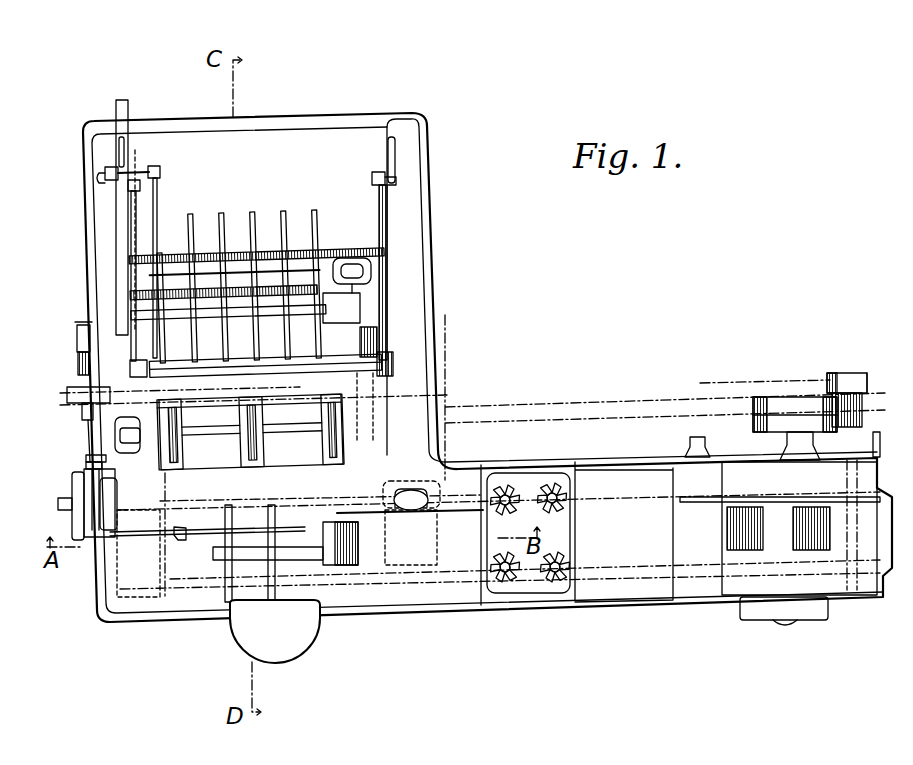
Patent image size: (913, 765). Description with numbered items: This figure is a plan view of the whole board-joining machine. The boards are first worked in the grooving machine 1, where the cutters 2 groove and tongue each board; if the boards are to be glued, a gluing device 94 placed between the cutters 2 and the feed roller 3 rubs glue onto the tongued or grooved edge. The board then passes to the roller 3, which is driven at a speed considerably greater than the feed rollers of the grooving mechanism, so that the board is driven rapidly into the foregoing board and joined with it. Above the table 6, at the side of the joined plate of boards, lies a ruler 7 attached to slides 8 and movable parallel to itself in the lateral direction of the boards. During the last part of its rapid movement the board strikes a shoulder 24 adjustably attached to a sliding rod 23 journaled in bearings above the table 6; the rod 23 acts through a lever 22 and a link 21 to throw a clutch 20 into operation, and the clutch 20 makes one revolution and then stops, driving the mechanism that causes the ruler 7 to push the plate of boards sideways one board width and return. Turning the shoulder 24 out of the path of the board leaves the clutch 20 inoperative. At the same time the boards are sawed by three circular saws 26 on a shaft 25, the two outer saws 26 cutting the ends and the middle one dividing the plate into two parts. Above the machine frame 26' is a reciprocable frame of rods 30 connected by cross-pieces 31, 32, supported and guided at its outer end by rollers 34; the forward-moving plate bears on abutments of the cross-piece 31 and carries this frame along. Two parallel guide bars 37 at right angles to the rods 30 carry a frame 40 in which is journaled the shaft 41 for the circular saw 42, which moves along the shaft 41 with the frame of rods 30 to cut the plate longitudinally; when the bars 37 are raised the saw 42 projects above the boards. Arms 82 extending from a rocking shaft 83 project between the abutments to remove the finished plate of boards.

The grooving machine 1 is at (637, 597).
The cutters 2 is at (548, 577).
The roller 3 is at (345, 566).
The table 6 is at (208, 608).
The ruler 7 is at (214, 553).
The slides 8 is at (272, 505).
The clutch 20 is at (72, 476).
The link 21 is at (90, 464).
The lever 22 is at (95, 460).
The sliding rod 23 is at (225, 528).
The shoulder 24 is at (180, 541).
The shaft 25 is at (250, 432).
The circular saws 26 is at (252, 432).
The machine frame 26' is at (466, 367).
The rods 30 is at (142, 198).
The cross-piece 31 is at (298, 297).
The cross-piece 32 is at (273, 358).
The rollers 34 is at (103, 181).
The guide bars 37 is at (300, 250).
The frame 40 is at (347, 252).
The shaft 41 is at (360, 320).
The circular saw 42 is at (347, 365).
The arms 82 is at (212, 297).
The rocking shaft 83 is at (175, 270).
The gluing device 94 is at (410, 523).